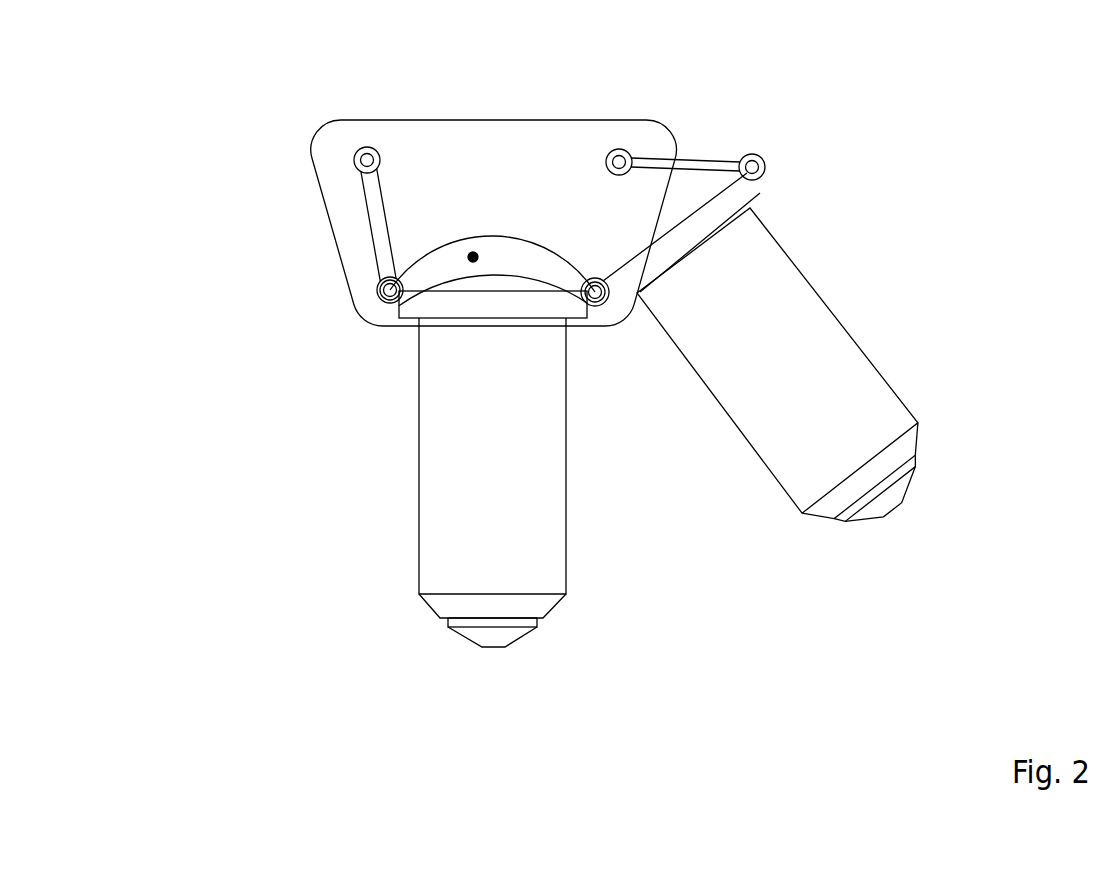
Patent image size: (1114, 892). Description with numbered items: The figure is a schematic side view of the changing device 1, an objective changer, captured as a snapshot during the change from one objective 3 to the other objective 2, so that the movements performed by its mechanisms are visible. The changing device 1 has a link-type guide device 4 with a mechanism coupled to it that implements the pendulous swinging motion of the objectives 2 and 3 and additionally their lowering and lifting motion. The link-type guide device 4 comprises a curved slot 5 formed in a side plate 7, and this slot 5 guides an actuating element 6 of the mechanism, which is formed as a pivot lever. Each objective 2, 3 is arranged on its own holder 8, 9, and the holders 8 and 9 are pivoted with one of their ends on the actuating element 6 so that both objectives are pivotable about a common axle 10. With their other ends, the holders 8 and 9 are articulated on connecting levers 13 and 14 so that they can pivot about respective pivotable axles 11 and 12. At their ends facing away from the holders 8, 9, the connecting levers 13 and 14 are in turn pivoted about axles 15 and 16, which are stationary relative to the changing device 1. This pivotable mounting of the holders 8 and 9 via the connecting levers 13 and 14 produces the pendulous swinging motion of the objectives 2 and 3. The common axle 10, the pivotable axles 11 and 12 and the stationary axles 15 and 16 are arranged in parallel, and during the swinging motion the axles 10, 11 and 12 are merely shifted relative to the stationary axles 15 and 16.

The changing device 1 is at (771, 105).
The objective 2 is at (779, 483).
The objective 3 is at (418, 498).
The link-type guide device 4 is at (382, 305).
The curved slot 5 is at (473, 257).
The actuating element 6 is at (595, 292).
The side plate 7 is at (319, 183).
The holder 8 is at (760, 193).
The holder 9 is at (414, 318).
The common axle 10 is at (596, 293).
The pivotable axle 11 is at (752, 167).
The pivotable axle 12 is at (392, 291).
The connecting lever 13 is at (690, 158).
The connecting lever 14 is at (373, 228).
The stationary axle 15 is at (619, 162).
The stationary axle 16 is at (367, 160).